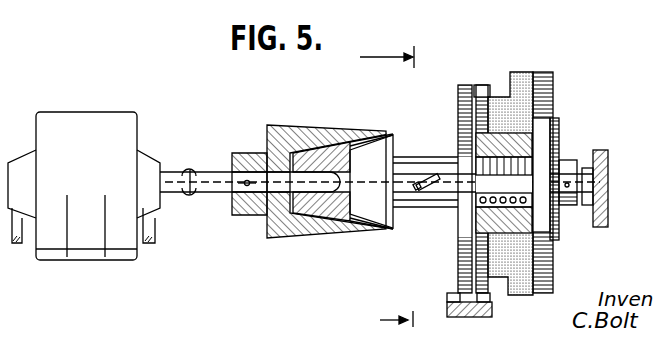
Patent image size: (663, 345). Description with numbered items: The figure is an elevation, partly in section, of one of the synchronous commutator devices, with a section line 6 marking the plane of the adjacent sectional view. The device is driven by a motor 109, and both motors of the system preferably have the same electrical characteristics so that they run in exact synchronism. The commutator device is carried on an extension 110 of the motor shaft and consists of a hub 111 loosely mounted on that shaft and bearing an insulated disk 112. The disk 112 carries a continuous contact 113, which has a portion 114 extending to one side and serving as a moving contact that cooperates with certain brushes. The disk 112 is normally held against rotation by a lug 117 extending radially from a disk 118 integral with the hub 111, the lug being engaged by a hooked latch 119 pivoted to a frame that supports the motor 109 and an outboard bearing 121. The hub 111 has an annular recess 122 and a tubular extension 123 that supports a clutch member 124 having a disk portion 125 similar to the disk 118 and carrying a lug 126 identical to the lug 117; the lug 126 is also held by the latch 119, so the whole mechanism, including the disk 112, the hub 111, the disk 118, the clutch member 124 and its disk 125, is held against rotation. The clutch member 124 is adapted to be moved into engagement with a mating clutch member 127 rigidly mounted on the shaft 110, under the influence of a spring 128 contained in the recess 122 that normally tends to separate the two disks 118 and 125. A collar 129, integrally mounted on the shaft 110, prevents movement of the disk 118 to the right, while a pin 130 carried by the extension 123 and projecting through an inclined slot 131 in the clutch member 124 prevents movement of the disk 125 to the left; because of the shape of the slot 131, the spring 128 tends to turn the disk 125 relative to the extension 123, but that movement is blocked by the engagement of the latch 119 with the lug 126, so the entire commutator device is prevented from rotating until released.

The section line 6- 6 is at (394, 188).
The motor 109 is at (117, 124).
The extension of the motor shaft 110 is at (208, 171).
The hub 111 is at (559, 136).
The insulated disk 112 is at (518, 73).
The continuous contact 113 is at (548, 76).
The portion of the continuous contact 114 is at (512, 121).
The lug 117 is at (490, 303).
The disk 118 is at (481, 87).
The hooked latch 119 is at (463, 316).
The outboard bearing 121 is at (609, 154).
The annular recess 122 is at (471, 218).
The tubular extension 123 is at (303, 214).
The clutch member 124 is at (389, 141).
The disk portion 125 is at (462, 122).
The lug 126 is at (455, 300).
The mating clutch member 127 is at (292, 128).
The spring 128 is at (476, 163).
The collar 129 is at (567, 160).
The pin 130 is at (415, 186).
The inclined slot 131 is at (432, 191).